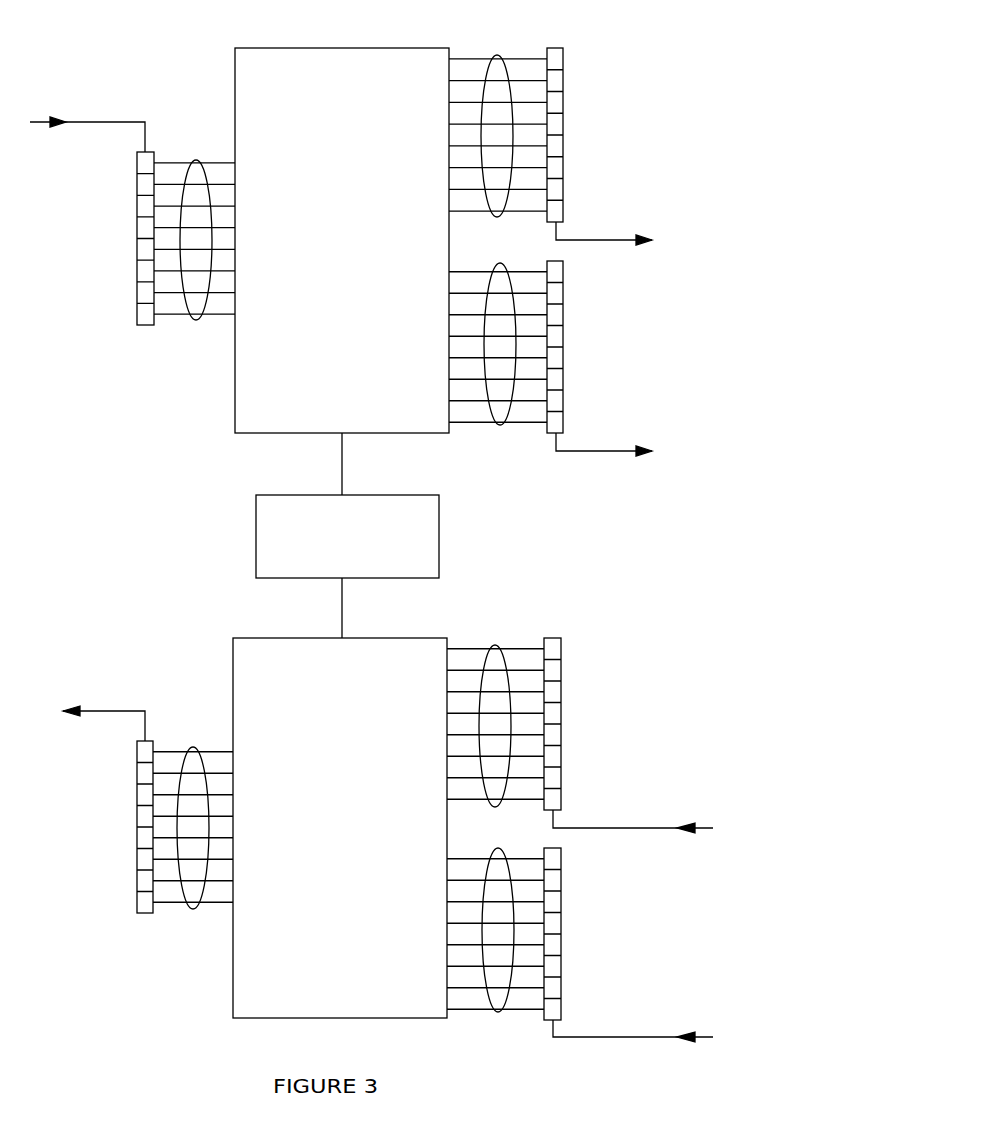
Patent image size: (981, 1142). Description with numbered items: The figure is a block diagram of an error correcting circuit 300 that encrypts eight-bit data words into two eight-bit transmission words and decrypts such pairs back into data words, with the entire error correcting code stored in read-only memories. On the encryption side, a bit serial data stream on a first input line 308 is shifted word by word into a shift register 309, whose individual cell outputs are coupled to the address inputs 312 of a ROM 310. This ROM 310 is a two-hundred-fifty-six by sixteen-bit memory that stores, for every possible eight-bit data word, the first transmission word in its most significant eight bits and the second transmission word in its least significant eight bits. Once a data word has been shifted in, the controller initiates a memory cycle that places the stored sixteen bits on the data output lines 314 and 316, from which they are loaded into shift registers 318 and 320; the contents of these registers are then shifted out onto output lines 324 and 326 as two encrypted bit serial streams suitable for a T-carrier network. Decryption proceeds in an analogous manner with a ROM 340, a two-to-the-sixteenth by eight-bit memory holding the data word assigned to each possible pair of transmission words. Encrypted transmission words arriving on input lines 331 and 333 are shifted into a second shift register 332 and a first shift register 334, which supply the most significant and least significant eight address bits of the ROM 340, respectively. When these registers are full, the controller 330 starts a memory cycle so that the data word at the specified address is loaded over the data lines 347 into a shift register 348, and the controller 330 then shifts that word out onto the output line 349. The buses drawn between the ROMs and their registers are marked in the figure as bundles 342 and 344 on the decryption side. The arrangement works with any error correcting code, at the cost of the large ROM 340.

The error correcting circuit 300 is at (130, 992).
The first input line 308 is at (90, 122).
The shift register 309 is at (140, 253).
The ROM 310 is at (358, 261).
The address inputs 312 is at (196, 161).
The data output lines 314 is at (497, 57).
The data output lines 316 is at (500, 425).
The shift register 318 is at (558, 125).
The shift register 320 is at (556, 357).
The output line 324 is at (597, 240).
The output line 326 is at (595, 451).
The controller 330 is at (359, 559).
The input line 331 is at (595, 828).
The second shift register 332 is at (557, 715).
The input line 333 is at (593, 1037).
The first shift register 334 is at (556, 945).
The ROM 340 is at (357, 849).
The first input bus 342 is at (497, 648).
The second input bus 344 is at (500, 1010).
The data lines 347 is at (195, 748).
The shift register 348 is at (140, 839).
The output line 349 is at (90, 712).